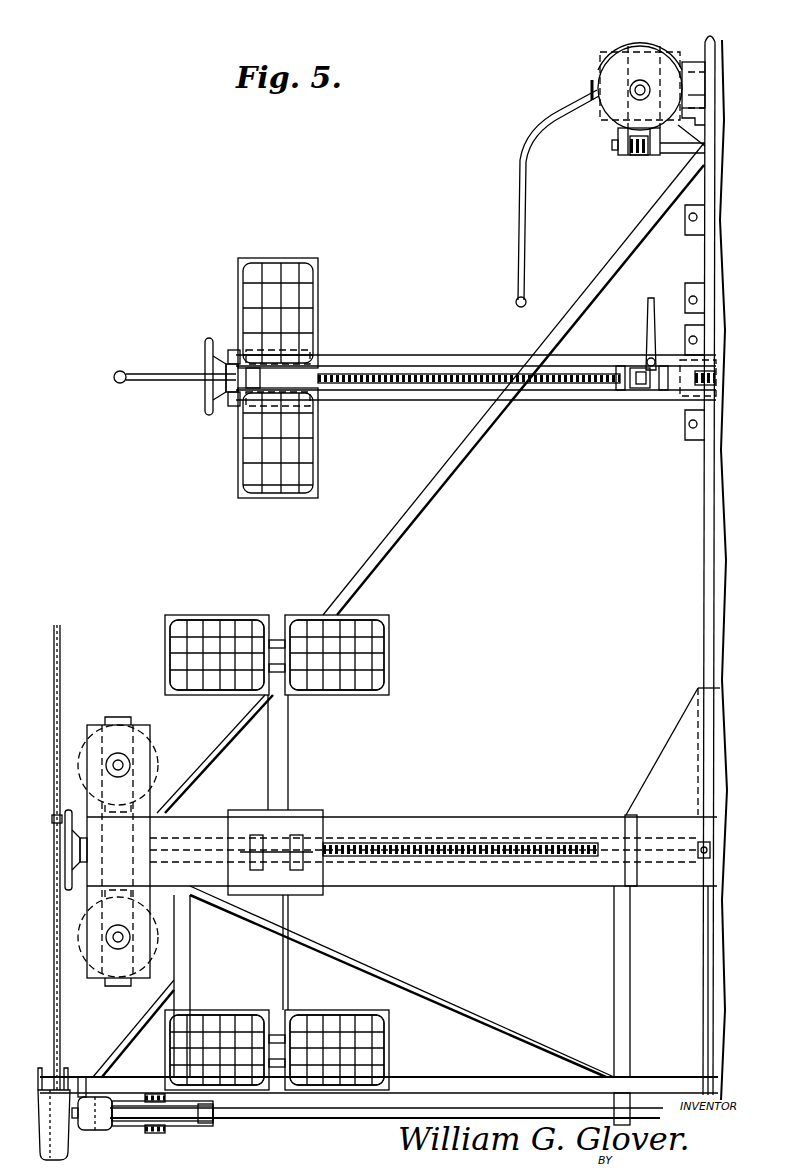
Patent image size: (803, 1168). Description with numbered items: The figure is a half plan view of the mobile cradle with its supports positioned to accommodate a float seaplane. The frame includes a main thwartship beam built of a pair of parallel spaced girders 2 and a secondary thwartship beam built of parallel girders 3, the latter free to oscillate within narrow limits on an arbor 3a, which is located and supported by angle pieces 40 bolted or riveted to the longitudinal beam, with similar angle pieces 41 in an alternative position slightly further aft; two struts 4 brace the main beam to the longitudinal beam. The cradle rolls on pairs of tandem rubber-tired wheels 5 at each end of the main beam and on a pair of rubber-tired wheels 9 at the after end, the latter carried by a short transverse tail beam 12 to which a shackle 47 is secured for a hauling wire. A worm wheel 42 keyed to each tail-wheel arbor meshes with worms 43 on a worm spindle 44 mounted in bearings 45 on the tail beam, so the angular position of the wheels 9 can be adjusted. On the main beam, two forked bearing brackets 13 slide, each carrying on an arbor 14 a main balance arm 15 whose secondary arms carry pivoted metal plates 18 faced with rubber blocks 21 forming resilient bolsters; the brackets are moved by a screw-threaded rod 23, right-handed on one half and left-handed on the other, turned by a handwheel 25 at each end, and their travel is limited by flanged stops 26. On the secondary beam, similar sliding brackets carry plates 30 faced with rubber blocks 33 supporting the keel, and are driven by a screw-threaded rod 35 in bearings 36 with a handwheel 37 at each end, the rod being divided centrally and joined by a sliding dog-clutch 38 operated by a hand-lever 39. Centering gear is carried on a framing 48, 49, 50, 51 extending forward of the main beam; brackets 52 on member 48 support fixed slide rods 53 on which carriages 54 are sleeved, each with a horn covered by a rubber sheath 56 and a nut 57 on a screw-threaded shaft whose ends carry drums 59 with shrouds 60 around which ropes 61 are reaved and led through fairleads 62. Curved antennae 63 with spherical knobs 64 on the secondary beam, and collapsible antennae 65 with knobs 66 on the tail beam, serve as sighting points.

The main transverse beam girders 2 is at (556, 830).
The secondary transverse beam girders 3 is at (482, 358).
The arbor 3a is at (708, 352).
The struts 4 is at (432, 496).
The rubber-tired wheels 5 is at (102, 915).
The rubber-tired wheels 9 is at (600, 50).
The short transverse beam 12 is at (690, 64).
The forked bearing brackets 13 is at (322, 810).
The arbor 14 is at (258, 832).
The main balance arm 15 is at (292, 916).
The metal plate 18 is at (215, 614).
The rubber blocks 21 is at (190, 642).
The screw-threaded rod 23 is at (405, 843).
The handwheel 25 is at (110, 808).
The flanged stops 26 is at (630, 830).
The metal plate 30 is at (300, 257).
The rubber blocks 33 is at (262, 290).
The screw-threaded rod 35 is at (390, 374).
The bearings 36 is at (258, 386).
The handwheel 37 is at (208, 355).
The sliding dog-clutch 38 is at (637, 388).
The operating hand-lever 39 is at (648, 312).
The angle pieces 40 is at (690, 338).
The angle pieces 41 is at (688, 222).
The worm wheel 42 is at (630, 46).
The worms 43 is at (637, 158).
The worm spindle 44 is at (695, 145).
The bearings 45 is at (620, 150).
The shackle 47 is at (711, 52).
The framing member 48 is at (663, 1065).
The framing member 49 is at (186, 942).
The framing member 50 is at (432, 993).
The framing member 51 is at (150, 1014).
The brackets 52 is at (620, 1100).
The fixed transverse slide rods 53 is at (525, 1117).
The frames or carriages 54 is at (166, 1095).
The rubber sheath 56 is at (112, 1097).
The nut 57 is at (152, 1128).
The drum or pulley 59 is at (60, 1075).
The shroud 60 is at (58, 1130).
The rope 61 is at (60, 648).
The fairleads 62 is at (68, 830).
The curved antennae 63 is at (140, 382).
The spherical knob 64 is at (120, 370).
The antennae 65 is at (632, 92).
The spherical knob 66 is at (512, 298).